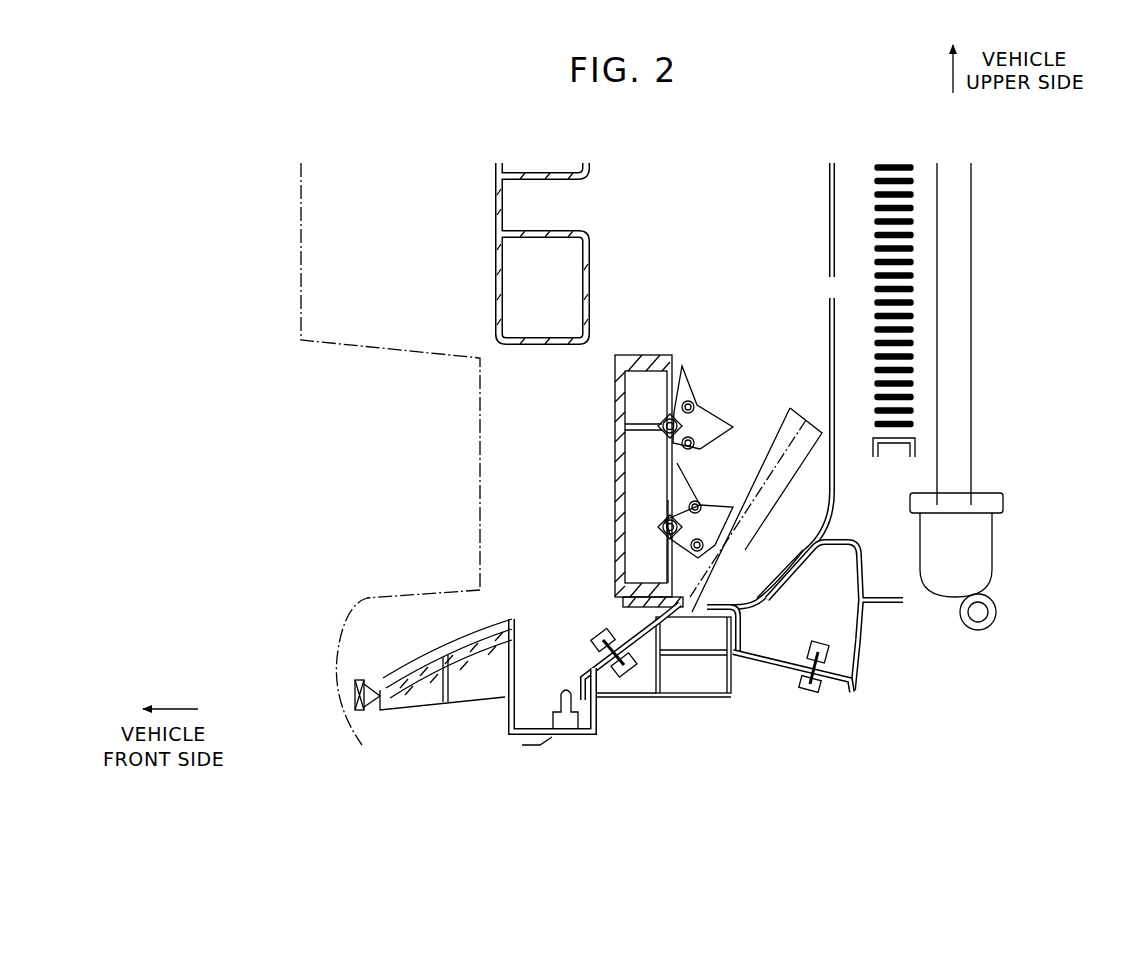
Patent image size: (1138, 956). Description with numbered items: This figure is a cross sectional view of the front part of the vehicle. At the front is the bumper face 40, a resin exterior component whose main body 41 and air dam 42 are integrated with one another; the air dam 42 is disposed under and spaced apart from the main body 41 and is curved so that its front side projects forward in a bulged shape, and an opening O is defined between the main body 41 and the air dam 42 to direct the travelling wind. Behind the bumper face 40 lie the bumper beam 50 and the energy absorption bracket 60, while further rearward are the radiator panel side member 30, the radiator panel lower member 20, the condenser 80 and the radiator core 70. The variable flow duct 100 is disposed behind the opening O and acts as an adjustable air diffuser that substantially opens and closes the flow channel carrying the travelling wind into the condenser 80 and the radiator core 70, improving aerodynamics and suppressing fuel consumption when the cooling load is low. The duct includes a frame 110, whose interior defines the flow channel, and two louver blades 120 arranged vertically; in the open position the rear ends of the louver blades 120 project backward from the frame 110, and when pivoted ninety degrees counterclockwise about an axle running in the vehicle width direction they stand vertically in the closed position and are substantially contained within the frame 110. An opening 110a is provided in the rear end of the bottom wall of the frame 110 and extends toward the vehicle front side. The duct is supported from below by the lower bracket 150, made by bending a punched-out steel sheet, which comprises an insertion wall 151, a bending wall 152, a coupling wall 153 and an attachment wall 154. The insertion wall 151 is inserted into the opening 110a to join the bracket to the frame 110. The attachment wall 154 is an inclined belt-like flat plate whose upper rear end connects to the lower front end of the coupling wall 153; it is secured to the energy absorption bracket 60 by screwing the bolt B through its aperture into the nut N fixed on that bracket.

The radiator panel lower member 20 is at (865, 645).
The radiator panel side member 30 is at (835, 233).
The bumper face 40 is at (290, 186).
The main body 41 is at (301, 250).
The air dam 42 is at (339, 651).
The bumper beam 50 is at (496, 186).
The energy absorption (EA) bracket 60 is at (483, 667).
The radiator core 70 is at (971, 205).
The condenser 80 is at (880, 163).
The variable flow duct 100 is at (779, 398).
The frame 110 is at (632, 355).
The opening 110a is at (625, 570).
The louver blades 120 is at (690, 402).
The lower bracket 150 is at (665, 700).
The insertion wall 151 is at (612, 598).
The bending wall 152 is at (685, 593).
The coupling wall 153 is at (692, 660).
The attachment wall 154 is at (583, 672).
The bolt B is at (608, 665).
The nut N is at (612, 680).
The opening O is at (470, 480).